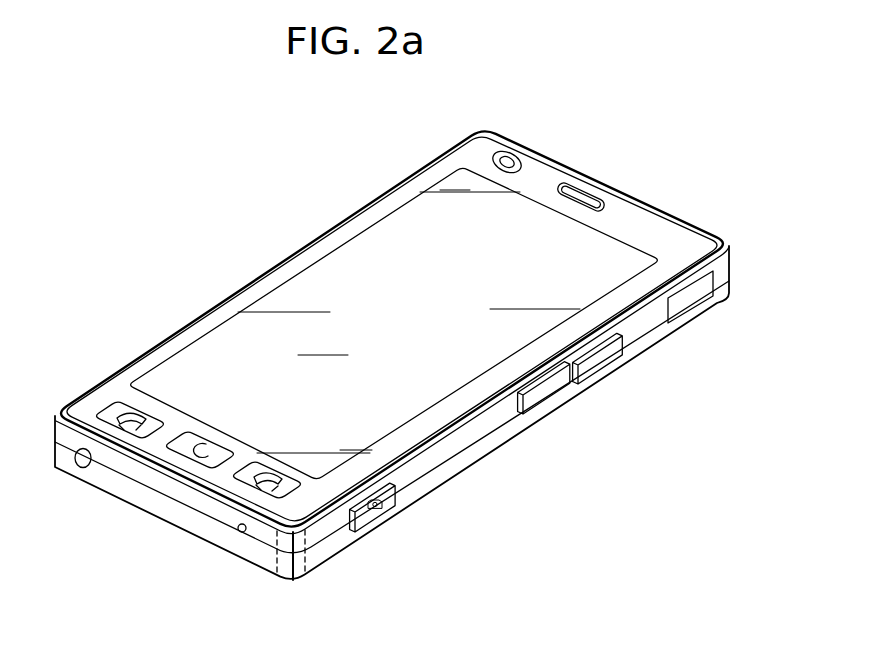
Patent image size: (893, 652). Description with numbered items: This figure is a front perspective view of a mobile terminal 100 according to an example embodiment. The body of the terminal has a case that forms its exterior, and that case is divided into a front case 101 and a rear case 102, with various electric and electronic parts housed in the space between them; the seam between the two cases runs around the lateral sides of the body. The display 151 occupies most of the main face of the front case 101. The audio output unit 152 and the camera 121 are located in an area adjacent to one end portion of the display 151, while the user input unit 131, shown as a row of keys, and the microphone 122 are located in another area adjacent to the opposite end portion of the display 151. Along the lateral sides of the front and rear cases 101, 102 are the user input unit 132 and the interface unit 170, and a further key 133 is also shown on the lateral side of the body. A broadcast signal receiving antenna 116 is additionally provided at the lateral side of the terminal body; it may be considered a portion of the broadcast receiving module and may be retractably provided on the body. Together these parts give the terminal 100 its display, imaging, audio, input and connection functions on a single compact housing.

The mobile terminal 100 is at (426, 335).
The front case 101 is at (727, 264).
The rear case 102 is at (731, 281).
The broadcast signal receiving antenna 116 is at (82, 461).
The camera 121 is at (507, 158).
The microphone 122 is at (240, 533).
The user input unit 131 is at (110, 410).
The user input unit 132 is at (555, 392).
The camera key 133 is at (385, 499).
The display 151 is at (345, 262).
The audio output unit 152 is at (585, 195).
The interface unit 170 is at (690, 304).